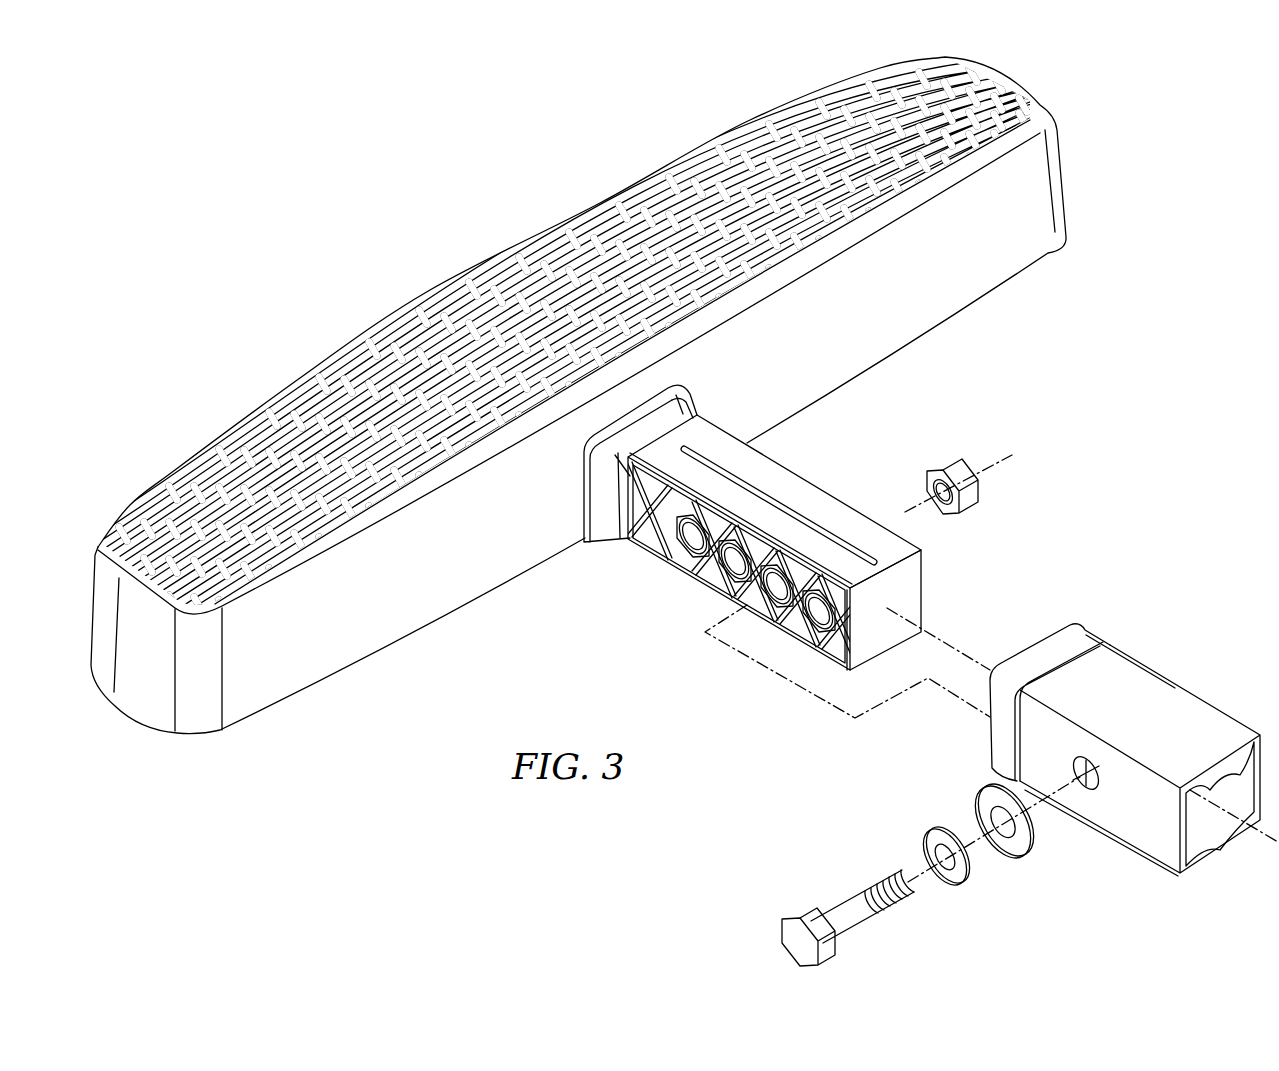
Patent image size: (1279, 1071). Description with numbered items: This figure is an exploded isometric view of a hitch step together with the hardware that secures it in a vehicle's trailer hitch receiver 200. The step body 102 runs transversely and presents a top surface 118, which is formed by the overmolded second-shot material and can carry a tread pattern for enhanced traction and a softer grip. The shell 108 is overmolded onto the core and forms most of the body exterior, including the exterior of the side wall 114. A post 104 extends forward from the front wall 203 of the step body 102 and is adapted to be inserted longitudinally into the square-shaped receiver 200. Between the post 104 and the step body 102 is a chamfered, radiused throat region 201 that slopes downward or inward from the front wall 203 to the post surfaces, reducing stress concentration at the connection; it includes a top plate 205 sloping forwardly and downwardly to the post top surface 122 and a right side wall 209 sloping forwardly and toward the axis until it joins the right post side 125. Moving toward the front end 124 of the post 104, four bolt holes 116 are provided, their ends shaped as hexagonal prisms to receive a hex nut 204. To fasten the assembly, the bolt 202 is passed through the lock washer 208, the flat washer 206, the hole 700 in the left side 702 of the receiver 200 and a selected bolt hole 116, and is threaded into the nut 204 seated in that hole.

The step body 102 is at (385, 338).
The post 104 is at (843, 503).
The shell 108 is at (312, 653).
The side wall 114 is at (147, 690).
The bolt holes 116 is at (818, 614).
The top surface 118 is at (640, 238).
The post top surface 122 is at (777, 480).
The front end 124 is at (905, 607).
The right post side 125 is at (690, 572).
The trailer hitch receiver 200 is at (1173, 703).
The throat region 201 is at (607, 535).
The bolt 202 is at (803, 910).
The front wall 203 is at (943, 290).
The nut 204 is at (987, 490).
The top plate 205 is at (688, 402).
The flat washer 206 is at (983, 797).
The lock washer 208 is at (930, 832).
The right side wall 209 is at (600, 503).
The hole 700 is at (1090, 789).
The left side 702 is at (1132, 830).